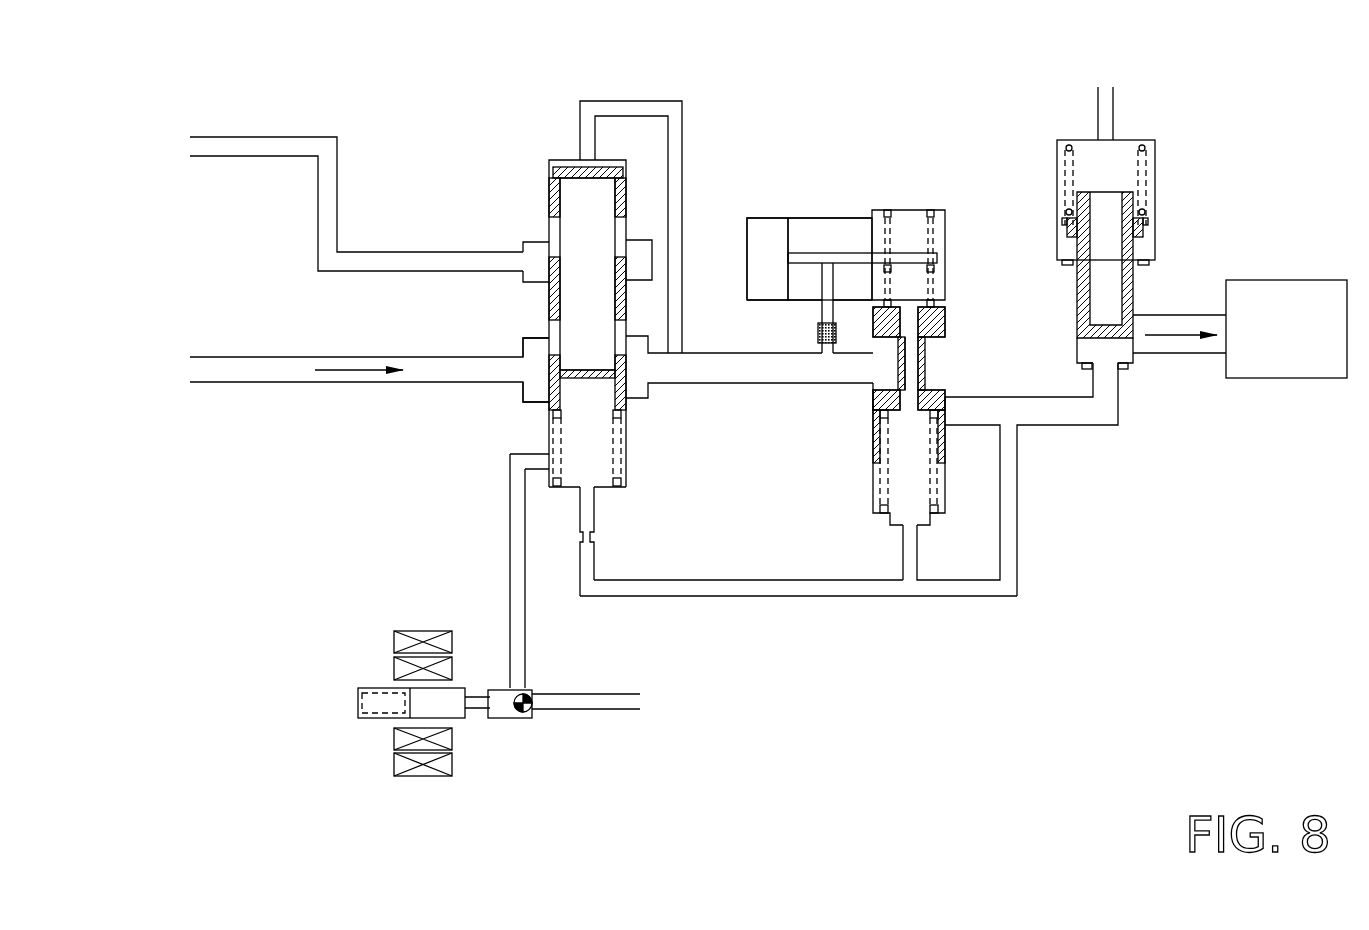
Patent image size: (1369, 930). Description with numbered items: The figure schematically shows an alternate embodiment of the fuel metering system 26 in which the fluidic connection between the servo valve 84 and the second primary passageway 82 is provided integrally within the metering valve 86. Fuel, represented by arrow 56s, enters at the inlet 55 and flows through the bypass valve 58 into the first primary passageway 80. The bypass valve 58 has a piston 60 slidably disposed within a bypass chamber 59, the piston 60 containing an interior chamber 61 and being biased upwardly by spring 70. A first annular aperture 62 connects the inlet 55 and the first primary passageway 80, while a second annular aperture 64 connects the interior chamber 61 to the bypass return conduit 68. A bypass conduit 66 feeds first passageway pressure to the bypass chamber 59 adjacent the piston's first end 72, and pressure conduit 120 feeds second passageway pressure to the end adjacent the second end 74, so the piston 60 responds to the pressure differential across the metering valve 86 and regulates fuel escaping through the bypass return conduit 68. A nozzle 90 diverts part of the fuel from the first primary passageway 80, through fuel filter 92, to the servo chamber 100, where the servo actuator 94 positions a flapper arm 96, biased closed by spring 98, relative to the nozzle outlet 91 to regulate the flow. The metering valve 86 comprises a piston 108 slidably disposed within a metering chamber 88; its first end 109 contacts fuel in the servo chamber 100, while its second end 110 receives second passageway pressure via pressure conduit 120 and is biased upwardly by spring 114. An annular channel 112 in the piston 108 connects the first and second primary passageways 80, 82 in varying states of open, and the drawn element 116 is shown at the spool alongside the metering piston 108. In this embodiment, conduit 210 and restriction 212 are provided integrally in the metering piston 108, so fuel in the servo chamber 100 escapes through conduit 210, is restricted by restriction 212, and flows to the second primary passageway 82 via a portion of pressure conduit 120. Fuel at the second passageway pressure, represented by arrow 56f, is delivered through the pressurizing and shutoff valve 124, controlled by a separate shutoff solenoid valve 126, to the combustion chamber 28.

The fuel metering system 26 is at (900, 727).
The combustion chamber 28 is at (1312, 378).
The inlet 55 is at (237, 357).
The fuel 56s is at (360, 370).
The fuel 56f is at (1180, 337).
The bypass valve 58 is at (475, 183).
The bypass chamber 59 is at (622, 165).
The piston 60 is at (548, 302).
The interior chamber 61 is at (606, 277).
The first annular aperture 62 is at (548, 332).
The second annular aperture 64 is at (548, 238).
The bypass conduit 66 is at (678, 107).
The bypass return conduit 68 is at (263, 145).
The spring 70 is at (618, 468).
The first end 72 is at (573, 173).
The second end 74 is at (548, 420).
The first primary passageway 80 is at (697, 385).
The second primary passageway 82 is at (1107, 418).
The servo valve 84 is at (777, 193).
The metering valve 86 is at (860, 477).
The metering chamber 88 is at (925, 454).
The nozzle 90 is at (808, 302).
The outlet 91 is at (822, 270).
The fuel filter 92 is at (818, 333).
The servo actuator 94 is at (767, 243).
The flapper arm 96 is at (876, 310).
The spring 98 is at (927, 235).
The servo chamber 100 is at (862, 244).
The piston 108 is at (853, 423).
The first end 109 is at (945, 325).
The second end 110 is at (945, 402).
The annular channel 112 is at (945, 367).
The spring 114 is at (930, 493).
The second spool 116 is at (945, 307).
The pressure conduit 120 is at (735, 597).
The pressurizing and shutoff valve 124 is at (1165, 268).
The shutoff solenoid valve 126 is at (505, 778).
The conduit 210 is at (890, 367).
The restriction 212 is at (872, 307).